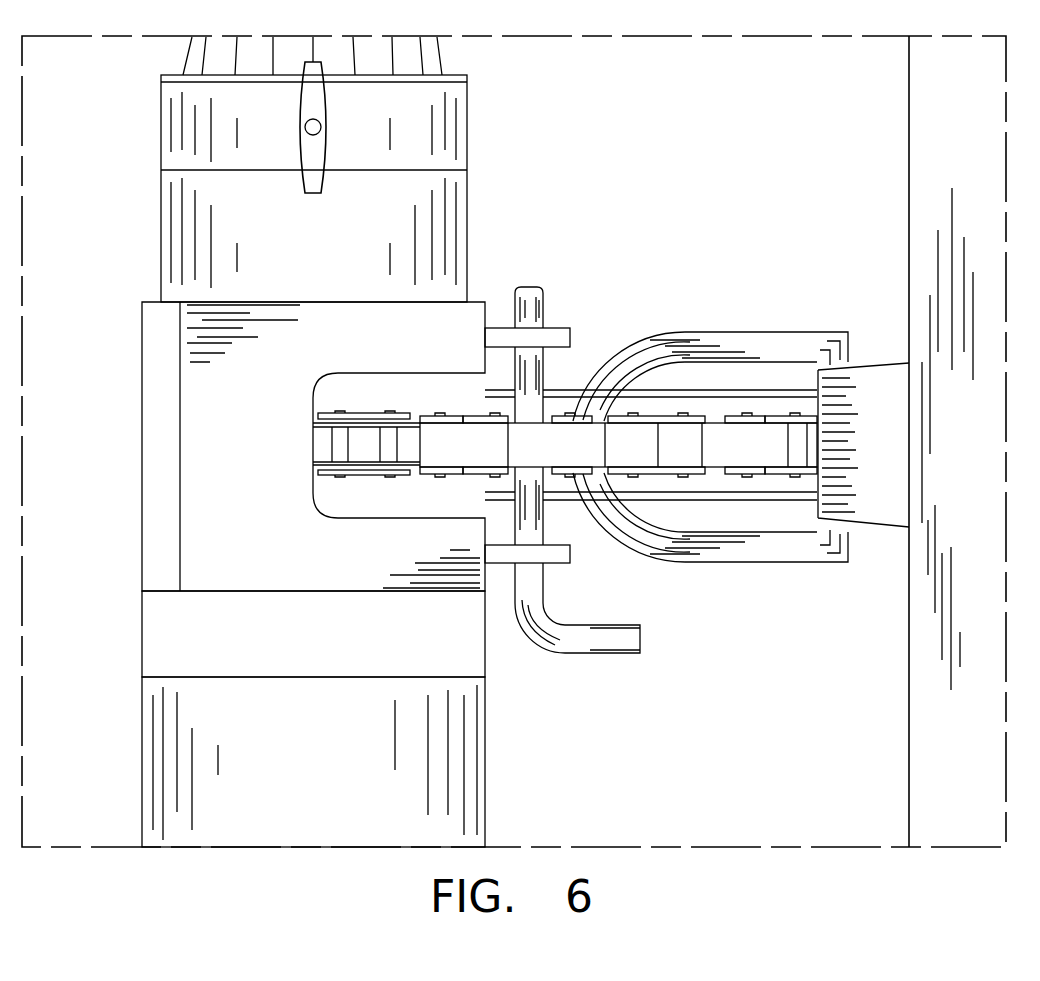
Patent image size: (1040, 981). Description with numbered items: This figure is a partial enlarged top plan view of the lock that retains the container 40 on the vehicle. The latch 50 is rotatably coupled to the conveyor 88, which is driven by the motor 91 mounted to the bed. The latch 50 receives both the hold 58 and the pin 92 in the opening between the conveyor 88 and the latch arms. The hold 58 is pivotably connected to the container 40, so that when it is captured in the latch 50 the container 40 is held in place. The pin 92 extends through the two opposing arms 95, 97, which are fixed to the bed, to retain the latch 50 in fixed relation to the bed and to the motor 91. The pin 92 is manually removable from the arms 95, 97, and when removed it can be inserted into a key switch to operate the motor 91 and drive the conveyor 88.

The motor 91 is at (432, 230).
The pin 92 is at (540, 302).
The arm 95 is at (572, 332).
The arm 97 is at (572, 557).
The hold 58 is at (705, 345).
The conveyor 88 is at (752, 410).
The latch 50 is at (627, 447).
The container 40 is at (979, 451).